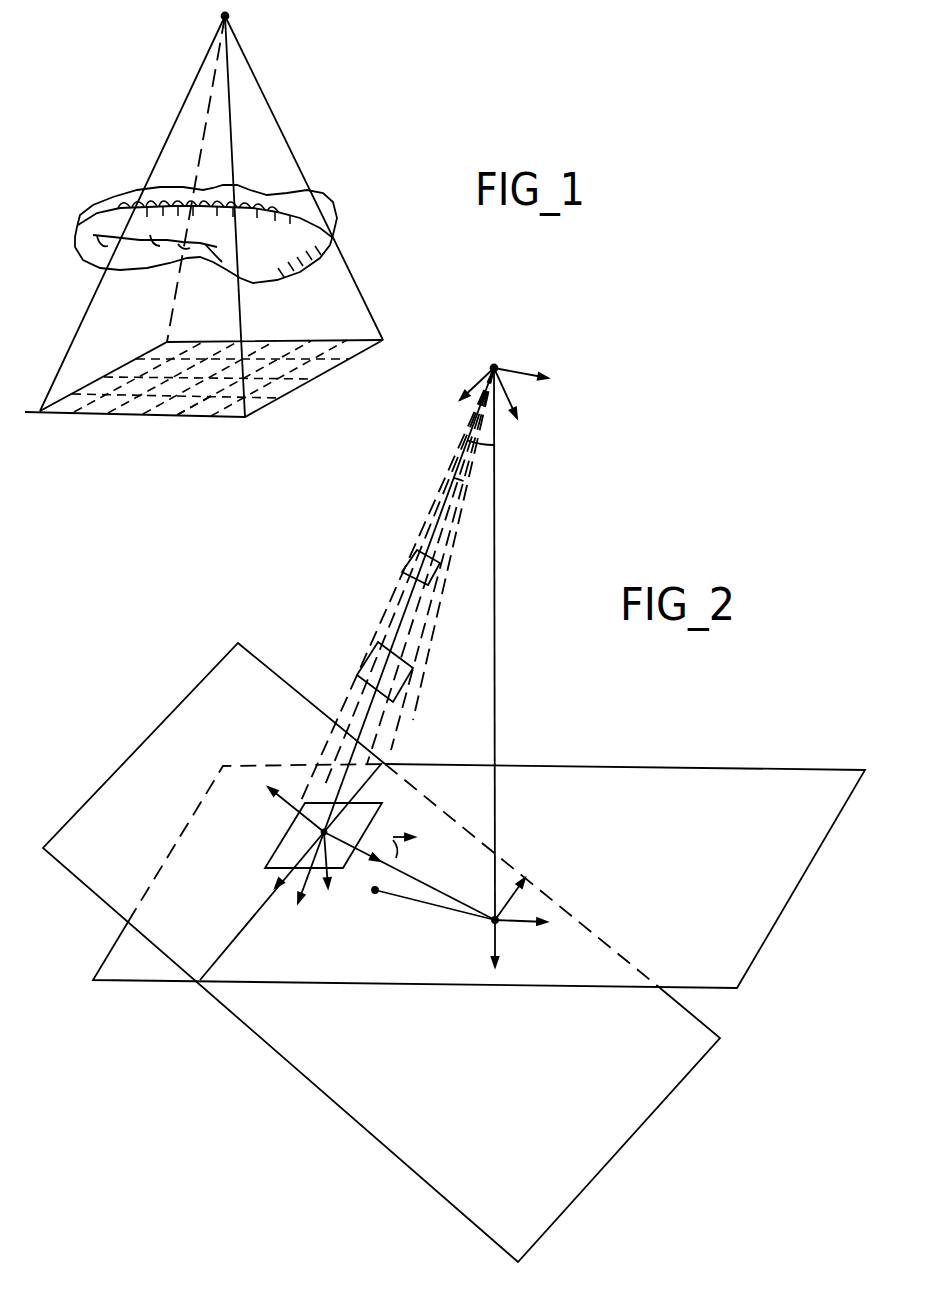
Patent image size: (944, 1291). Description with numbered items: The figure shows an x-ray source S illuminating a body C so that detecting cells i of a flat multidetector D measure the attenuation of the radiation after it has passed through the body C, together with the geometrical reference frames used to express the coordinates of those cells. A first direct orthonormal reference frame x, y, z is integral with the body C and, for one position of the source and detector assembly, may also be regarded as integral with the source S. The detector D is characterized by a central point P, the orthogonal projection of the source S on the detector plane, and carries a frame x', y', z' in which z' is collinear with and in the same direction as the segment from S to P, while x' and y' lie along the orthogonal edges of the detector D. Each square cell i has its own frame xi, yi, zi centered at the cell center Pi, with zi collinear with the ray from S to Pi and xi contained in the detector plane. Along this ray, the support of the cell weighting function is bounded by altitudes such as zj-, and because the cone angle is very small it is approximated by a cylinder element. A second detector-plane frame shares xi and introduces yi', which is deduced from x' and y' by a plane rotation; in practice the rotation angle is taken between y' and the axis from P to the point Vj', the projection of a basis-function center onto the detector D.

In FIG. 1, the source S is at (230, 17).
In FIG. 2, the source S is at (495, 366).
In FIG. 1, the body C is at (333, 202).
In FIG. 1, the multidetector D is at (65, 414).
In FIG. 2, the multidetector D is at (797, 887).
In FIG. 1, the detecting cell i is at (208, 395).
In FIG. 2, the x axis of first reference frame x is at (467, 386).
In FIG. 2, the y axis of first reference frame y is at (513, 398).
In FIG. 2, the z axis of first reference frame z is at (526, 367).
In FIG. 2, the lower altitude zj- is at (398, 700).
In FIG. 2, the center of the cell Pi is at (322, 833).
In FIG. 2, the vector xi is at (291, 871).
In FIG. 2, the vector yi is at (282, 800).
In FIG. 2, the vector zi is at (304, 885).
In FIG. 2, the vector yi' is at (409, 858).
In FIG. 2, the vector y' is at (478, 885).
In FIG. 2, the vector x' is at (524, 888).
In FIG. 2, the vector z' is at (425, 902).
In FIG. 2, the central point P is at (494, 917).
In FIG. 2, the projection of Vj on the detector Vj' is at (429, 914).